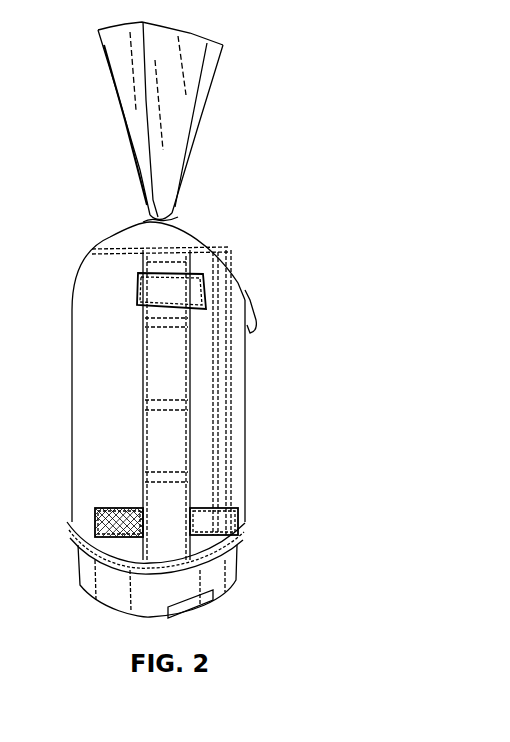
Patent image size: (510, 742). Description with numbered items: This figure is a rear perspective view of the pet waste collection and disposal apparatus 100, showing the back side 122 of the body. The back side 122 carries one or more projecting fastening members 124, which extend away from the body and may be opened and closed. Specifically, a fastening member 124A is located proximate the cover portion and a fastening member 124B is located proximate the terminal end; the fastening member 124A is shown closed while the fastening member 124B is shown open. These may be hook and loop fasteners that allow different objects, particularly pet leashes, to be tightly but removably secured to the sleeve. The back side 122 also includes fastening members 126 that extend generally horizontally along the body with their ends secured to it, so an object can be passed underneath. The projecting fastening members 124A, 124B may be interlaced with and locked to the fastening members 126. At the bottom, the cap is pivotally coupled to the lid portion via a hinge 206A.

The pet waste collection and disposal apparatus 100 is at (362, 58).
The back side 122 is at (222, 408).
The fastening members 124 is at (115, 526).
The fastening member 124A is at (205, 292).
The fastening member 124B is at (225, 523).
The fastening members 126 is at (143, 387).
The hinge 206A is at (220, 607).